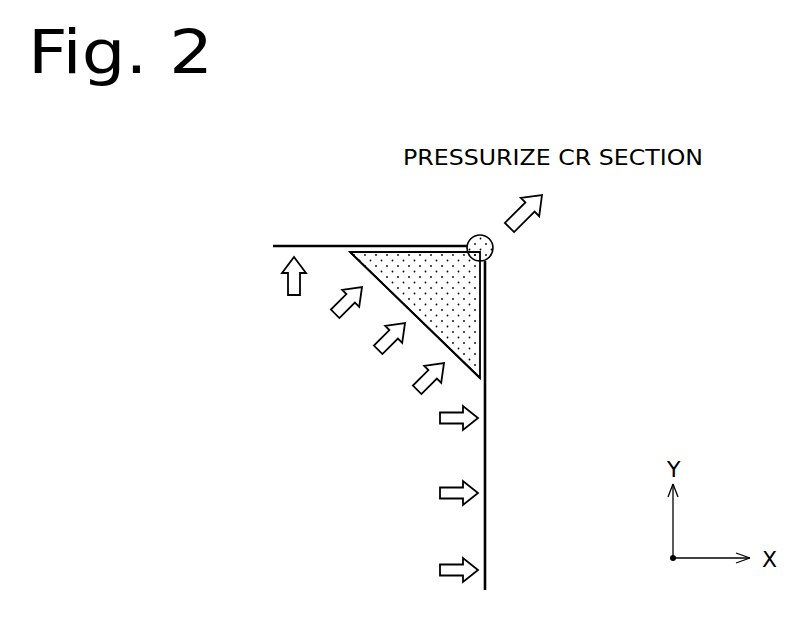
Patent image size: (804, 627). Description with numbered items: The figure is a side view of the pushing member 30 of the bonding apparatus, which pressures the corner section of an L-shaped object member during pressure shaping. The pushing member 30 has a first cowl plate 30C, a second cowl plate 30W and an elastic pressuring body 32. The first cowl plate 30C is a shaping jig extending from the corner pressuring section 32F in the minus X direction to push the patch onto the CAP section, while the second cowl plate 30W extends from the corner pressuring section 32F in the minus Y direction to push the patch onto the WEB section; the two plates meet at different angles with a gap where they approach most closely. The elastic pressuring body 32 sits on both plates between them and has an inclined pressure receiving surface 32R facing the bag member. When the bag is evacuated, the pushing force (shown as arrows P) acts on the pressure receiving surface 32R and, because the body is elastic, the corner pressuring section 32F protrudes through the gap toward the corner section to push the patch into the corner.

The pushing member 30 is at (445, 381).
The first cowl plate 30C is at (290, 245).
The second cowl plate 30W is at (486, 512).
The elastic pressuring body 32 is at (435, 254).
The pressure receiving surface 32R is at (394, 299).
The corner pressuring section 32F is at (493, 257).
The pressure P is at (412, 388).